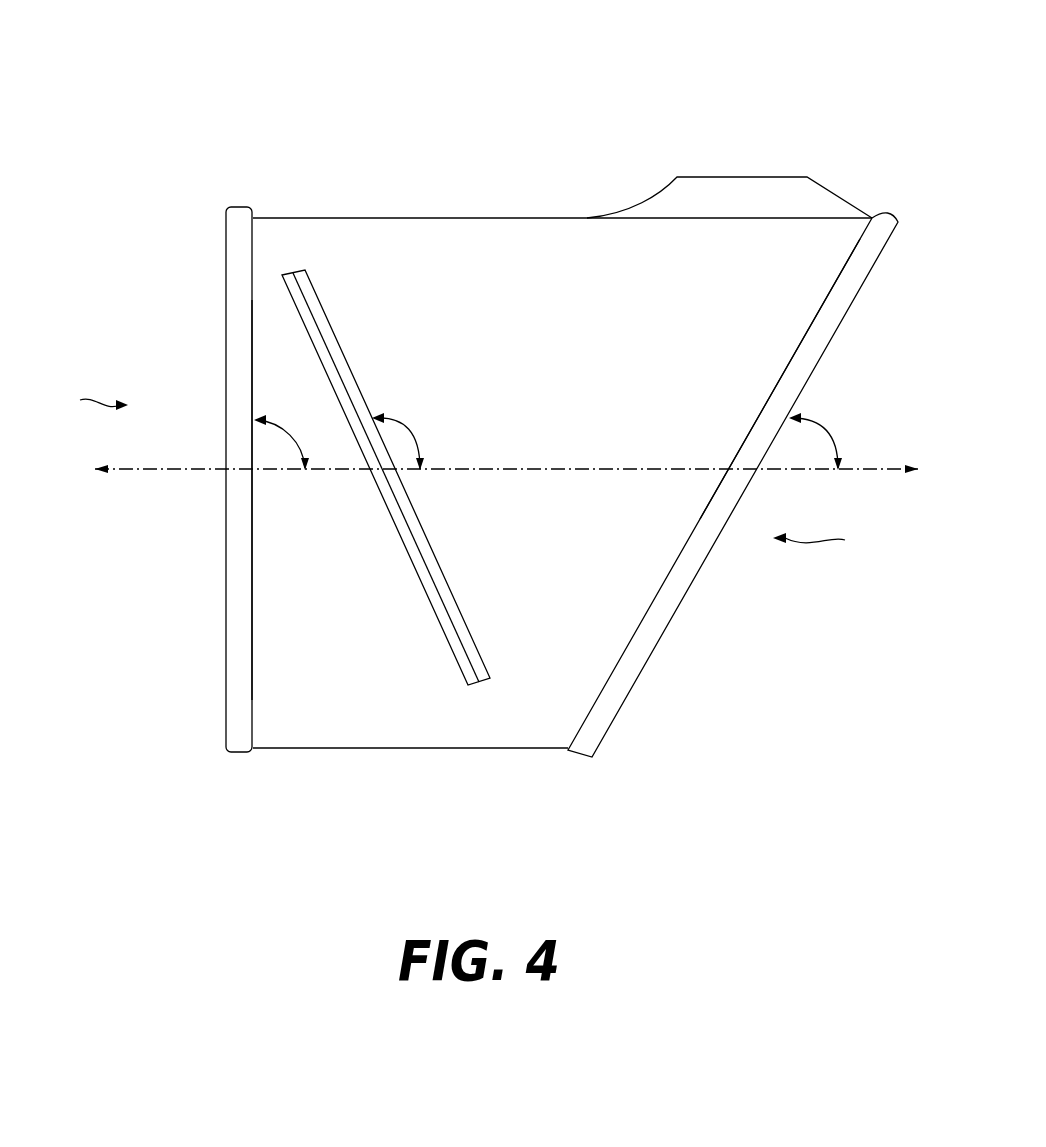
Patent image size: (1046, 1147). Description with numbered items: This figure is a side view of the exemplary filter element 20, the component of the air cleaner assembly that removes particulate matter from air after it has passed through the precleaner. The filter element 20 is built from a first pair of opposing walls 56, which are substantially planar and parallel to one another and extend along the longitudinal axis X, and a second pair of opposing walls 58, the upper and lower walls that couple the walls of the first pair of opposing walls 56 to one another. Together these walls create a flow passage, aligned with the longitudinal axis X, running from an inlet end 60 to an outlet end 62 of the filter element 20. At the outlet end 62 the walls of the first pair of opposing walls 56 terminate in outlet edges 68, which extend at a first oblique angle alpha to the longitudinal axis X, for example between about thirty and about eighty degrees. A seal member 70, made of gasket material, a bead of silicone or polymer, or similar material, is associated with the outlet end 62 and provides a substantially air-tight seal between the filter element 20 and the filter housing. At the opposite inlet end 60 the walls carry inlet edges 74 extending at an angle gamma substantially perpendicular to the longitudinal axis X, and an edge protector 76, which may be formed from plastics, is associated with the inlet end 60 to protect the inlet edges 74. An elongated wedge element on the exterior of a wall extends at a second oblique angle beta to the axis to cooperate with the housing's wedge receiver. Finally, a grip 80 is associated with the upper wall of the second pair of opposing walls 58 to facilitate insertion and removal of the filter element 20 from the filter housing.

The filter element 20 is at (600, 104).
The first pair of opposing walls 56 is at (580, 366).
The second pair of opposing walls 58 is at (360, 217).
The inlet end 60 is at (89, 403).
The outlet end 62 is at (822, 543).
The outlet edges 68 is at (812, 312).
The seal member 70 is at (892, 213).
The inlet edges 74 is at (252, 530).
The edge protector 76 is at (228, 222).
The grip 80 is at (732, 185).